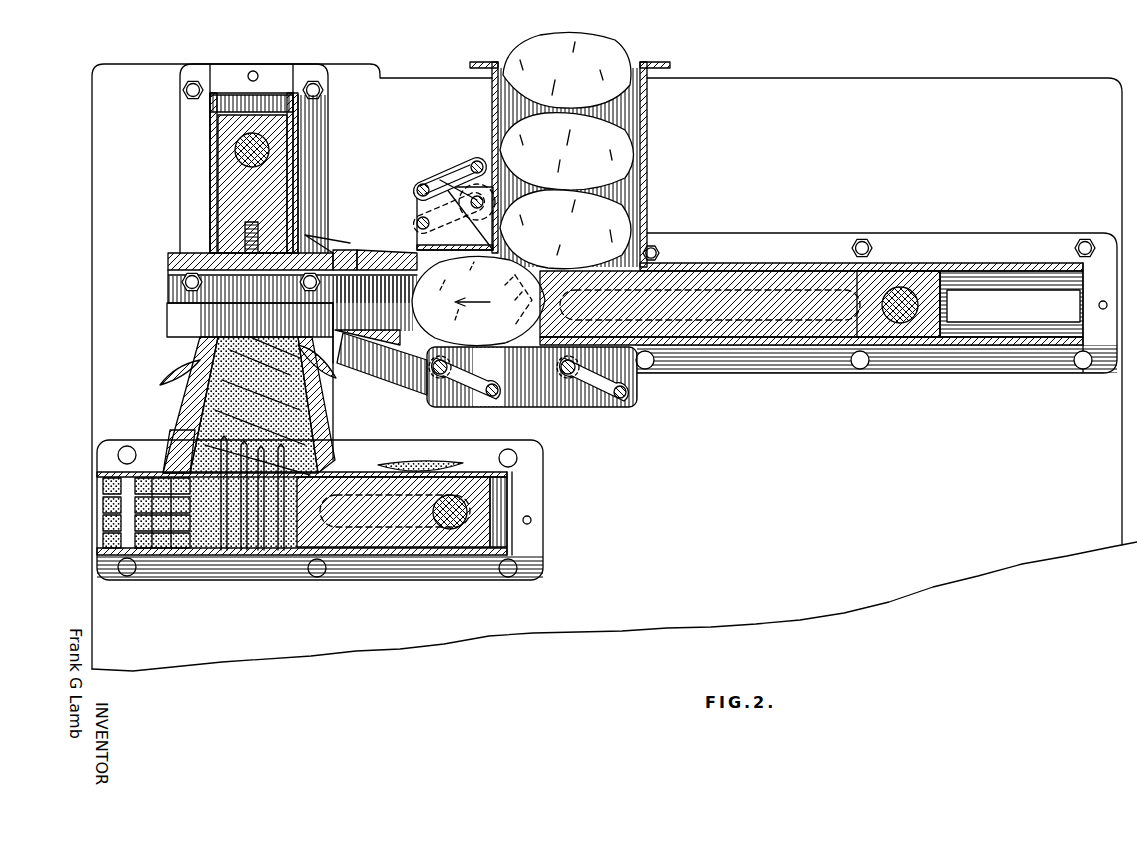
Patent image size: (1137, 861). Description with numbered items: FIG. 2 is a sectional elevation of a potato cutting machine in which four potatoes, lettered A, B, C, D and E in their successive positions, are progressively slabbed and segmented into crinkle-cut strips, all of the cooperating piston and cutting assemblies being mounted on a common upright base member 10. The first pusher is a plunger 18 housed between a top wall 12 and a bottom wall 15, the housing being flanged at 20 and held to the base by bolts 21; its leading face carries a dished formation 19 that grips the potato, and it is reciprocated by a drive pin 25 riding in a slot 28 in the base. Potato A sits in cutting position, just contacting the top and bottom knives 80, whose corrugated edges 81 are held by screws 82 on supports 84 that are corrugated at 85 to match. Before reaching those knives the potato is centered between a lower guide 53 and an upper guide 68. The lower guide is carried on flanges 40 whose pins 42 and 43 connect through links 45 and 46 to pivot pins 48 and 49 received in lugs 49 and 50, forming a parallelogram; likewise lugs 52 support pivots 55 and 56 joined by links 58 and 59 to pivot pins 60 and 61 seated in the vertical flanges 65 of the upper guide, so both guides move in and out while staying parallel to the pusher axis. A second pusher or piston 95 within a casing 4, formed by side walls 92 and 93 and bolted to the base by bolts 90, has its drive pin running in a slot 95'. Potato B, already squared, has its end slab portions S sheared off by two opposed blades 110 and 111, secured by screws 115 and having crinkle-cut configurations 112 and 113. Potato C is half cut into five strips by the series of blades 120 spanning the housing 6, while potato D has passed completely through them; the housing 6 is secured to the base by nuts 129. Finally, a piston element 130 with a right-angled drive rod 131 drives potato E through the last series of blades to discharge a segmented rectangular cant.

The upright base member 10 is at (962, 88).
The casing 4 is at (194, 187).
The bolts 90 is at (324, 90).
The side wall 92 is at (212, 128).
The side wall 93 is at (293, 180).
The pusher or piston 95 is at (290, 184).
The slot 95' is at (293, 163).
The cutting knives 80 is at (341, 238).
The screws 82 is at (352, 255).
The supports 84 is at (360, 268).
The corrugated inner surface 85 is at (340, 270).
The cutting blade 110 is at (195, 326).
The potato B is at (250, 338).
The screws 115 is at (178, 407).
The cutting blades 120 is at (338, 441).
The potato C is at (182, 432).
The crinkle cut configuration 112 is at (170, 447).
The cutting blade 111 is at (326, 421).
The crinkle cut configuration 113 is at (326, 467).
The end slab portions S is at (165, 372).
The housing 6 is at (437, 569).
The drive rod 131 is at (488, 508).
The piston element 130 is at (503, 522).
The nuts 129 is at (510, 575).
The potato D is at (272, 535).
The potato E is at (180, 560).
The pivot 56 is at (480, 200).
The groove or dished formation 19 is at (522, 265).
The crinkle-cut edge 81 is at (418, 290).
The potato A is at (412, 300).
The flange 20 is at (1048, 240).
The top wall 12 is at (793, 268).
The plunger 18 is at (940, 275).
The drive pin 25 is at (913, 278).
The slot 28 is at (975, 320).
The bottom wall 15 is at (877, 359).
The bolts 21 is at (655, 250).
The flanges 40 is at (582, 410).
The lower guide 53 is at (525, 360).
The link 45 is at (465, 380).
The link 46 is at (591, 380).
The pivot pin 48 is at (433, 369).
The pivot pin / lug 49 is at (436, 358).
The lugs 50 is at (575, 366).
The pin or pivot 42 is at (490, 393).
The pin or pivot 43 is at (638, 393).
The vertical flanges 65 is at (418, 204).
The upper guide member 68 is at (418, 250).
The pivot 55 is at (466, 162).
The link 58 is at (445, 178).
The link 59 is at (470, 207).
The lugs 52 is at (482, 162).
The pivot pin 60 is at (416, 188).
The pivot pin 61 is at (416, 223).